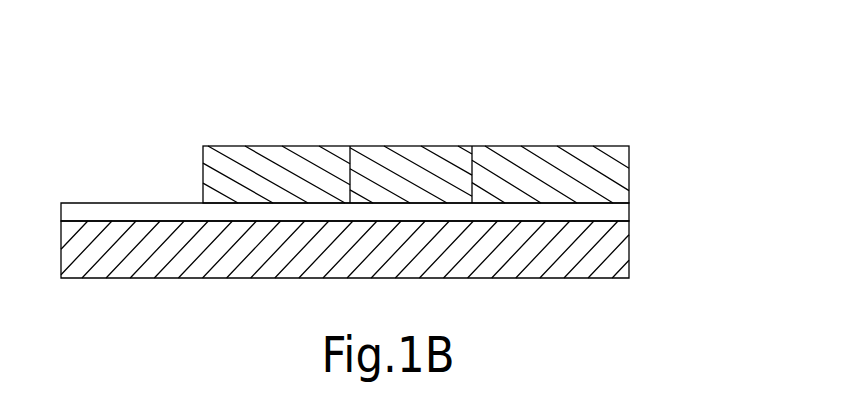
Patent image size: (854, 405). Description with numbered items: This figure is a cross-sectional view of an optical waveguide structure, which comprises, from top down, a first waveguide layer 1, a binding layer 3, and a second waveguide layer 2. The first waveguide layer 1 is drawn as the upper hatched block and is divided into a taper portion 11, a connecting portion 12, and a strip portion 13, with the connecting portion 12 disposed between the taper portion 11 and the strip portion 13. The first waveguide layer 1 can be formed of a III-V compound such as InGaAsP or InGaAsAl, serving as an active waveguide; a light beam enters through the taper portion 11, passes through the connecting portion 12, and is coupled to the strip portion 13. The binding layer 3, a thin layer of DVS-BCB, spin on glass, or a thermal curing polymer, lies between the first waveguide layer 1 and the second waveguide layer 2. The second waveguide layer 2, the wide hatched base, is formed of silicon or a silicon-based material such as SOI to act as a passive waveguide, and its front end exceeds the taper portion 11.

The first waveguide layer 1 is at (575, 46).
The taper portion 11 is at (282, 160).
The connecting portion 12 is at (408, 160).
The strip portion 13 is at (567, 160).
The second waveguide layer 2 is at (620, 256).
The binding layer 3 is at (618, 213).